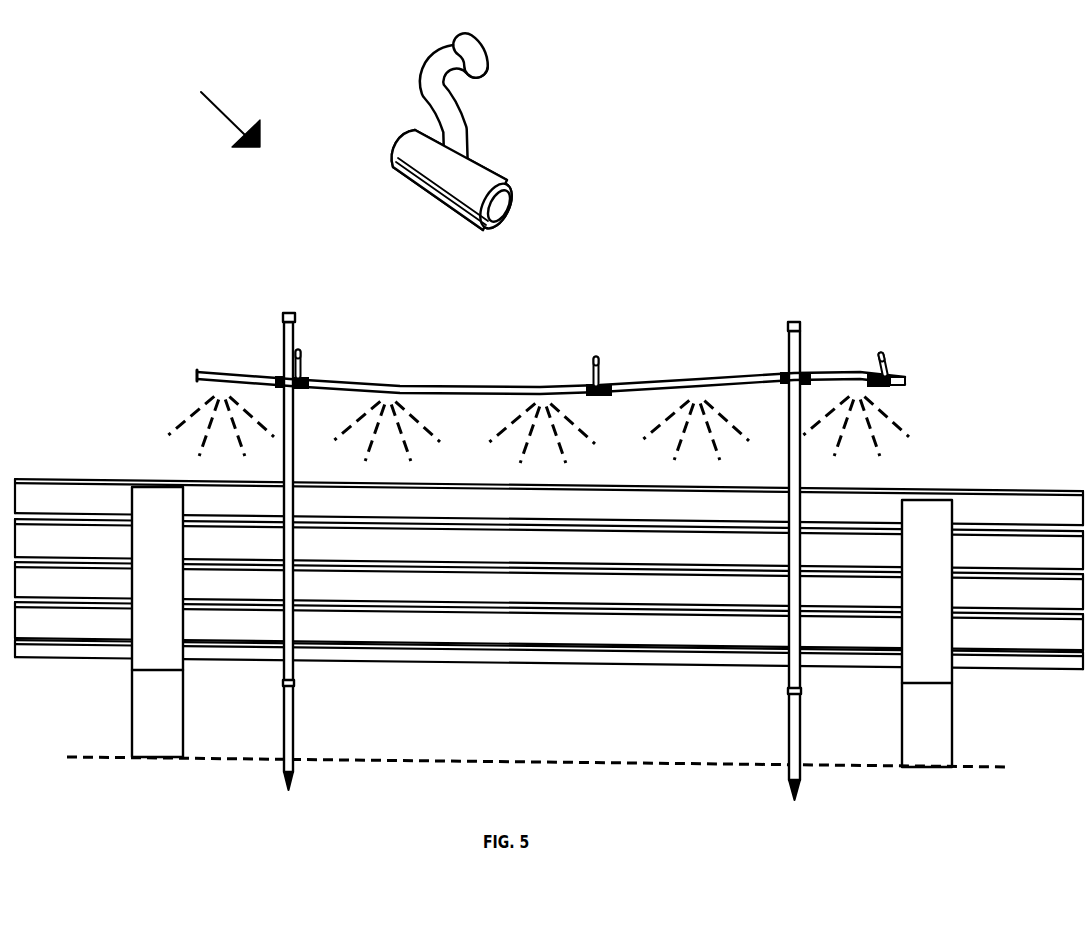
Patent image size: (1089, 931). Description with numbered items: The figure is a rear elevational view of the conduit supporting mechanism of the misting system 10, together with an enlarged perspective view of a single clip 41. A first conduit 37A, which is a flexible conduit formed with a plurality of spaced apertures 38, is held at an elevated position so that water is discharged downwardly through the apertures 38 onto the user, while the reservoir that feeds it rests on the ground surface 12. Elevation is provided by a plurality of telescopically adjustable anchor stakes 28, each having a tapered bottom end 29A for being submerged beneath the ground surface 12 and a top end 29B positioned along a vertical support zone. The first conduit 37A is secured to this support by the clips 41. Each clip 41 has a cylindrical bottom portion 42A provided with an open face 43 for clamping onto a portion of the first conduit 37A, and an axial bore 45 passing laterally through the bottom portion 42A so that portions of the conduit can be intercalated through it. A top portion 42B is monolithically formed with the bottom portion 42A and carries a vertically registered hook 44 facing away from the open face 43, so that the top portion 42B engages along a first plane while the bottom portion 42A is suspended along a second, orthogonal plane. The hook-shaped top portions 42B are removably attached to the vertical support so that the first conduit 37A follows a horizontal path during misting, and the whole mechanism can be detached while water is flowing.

The sprinkler system 10 is at (219, 107).
The ground surface 12 is at (568, 762).
The anchor stake 28 is at (300, 628).
The tapered bottom end 29A is at (288, 782).
The top end 29B is at (289, 313).
The first conduit 37A is at (245, 373).
The spaced apertures 38 is at (550, 397).
The clip 41 is at (470, 157).
The cylindrical bottom portion 42A is at (490, 183).
The top portion 42B is at (468, 102).
The open face 43 is at (888, 388).
The vertically registered hook 44 is at (477, 60).
The axial bore 45 is at (497, 205).